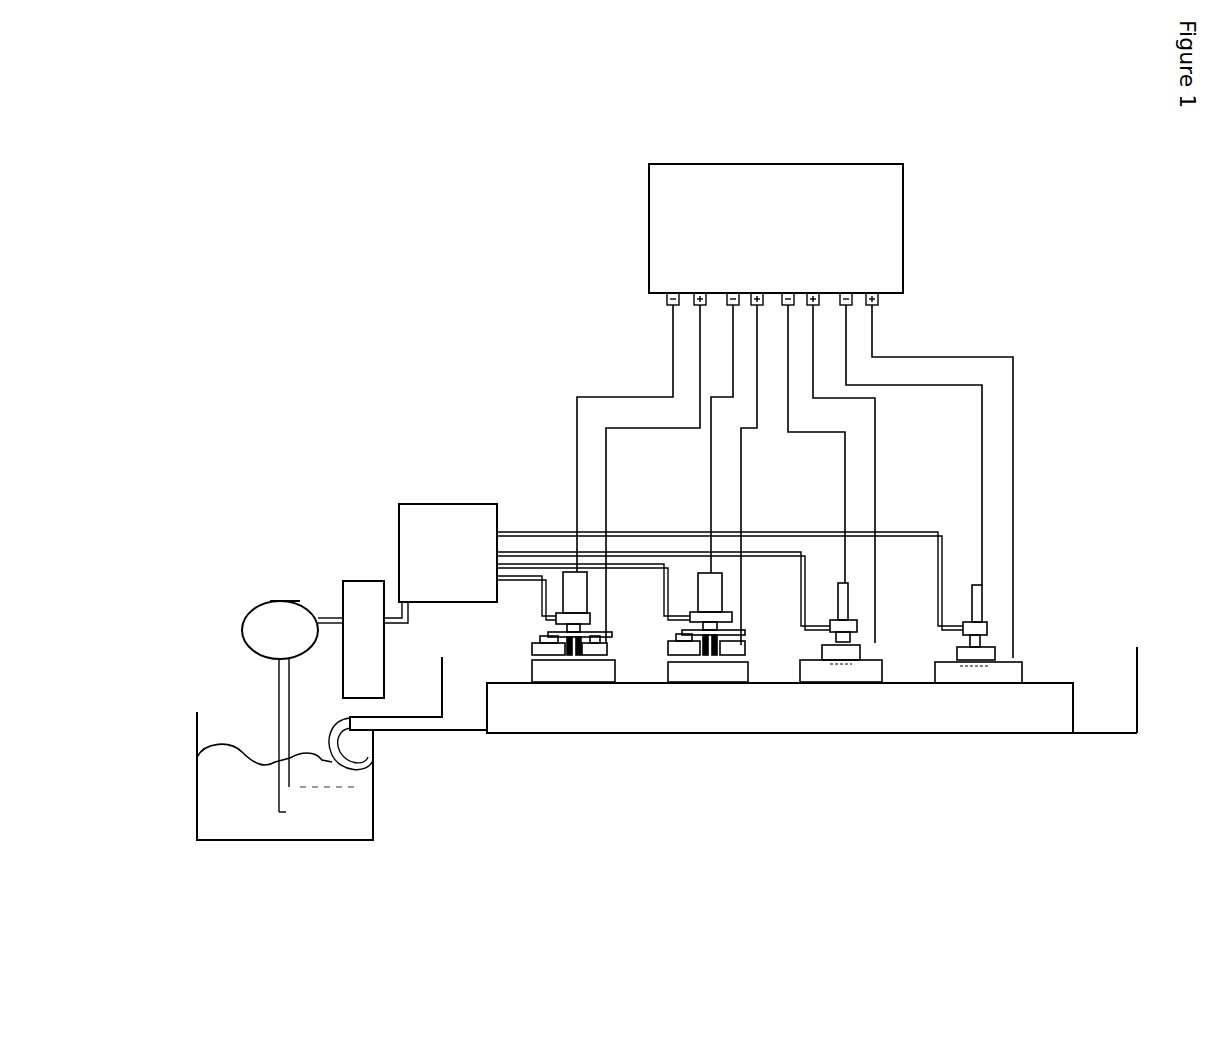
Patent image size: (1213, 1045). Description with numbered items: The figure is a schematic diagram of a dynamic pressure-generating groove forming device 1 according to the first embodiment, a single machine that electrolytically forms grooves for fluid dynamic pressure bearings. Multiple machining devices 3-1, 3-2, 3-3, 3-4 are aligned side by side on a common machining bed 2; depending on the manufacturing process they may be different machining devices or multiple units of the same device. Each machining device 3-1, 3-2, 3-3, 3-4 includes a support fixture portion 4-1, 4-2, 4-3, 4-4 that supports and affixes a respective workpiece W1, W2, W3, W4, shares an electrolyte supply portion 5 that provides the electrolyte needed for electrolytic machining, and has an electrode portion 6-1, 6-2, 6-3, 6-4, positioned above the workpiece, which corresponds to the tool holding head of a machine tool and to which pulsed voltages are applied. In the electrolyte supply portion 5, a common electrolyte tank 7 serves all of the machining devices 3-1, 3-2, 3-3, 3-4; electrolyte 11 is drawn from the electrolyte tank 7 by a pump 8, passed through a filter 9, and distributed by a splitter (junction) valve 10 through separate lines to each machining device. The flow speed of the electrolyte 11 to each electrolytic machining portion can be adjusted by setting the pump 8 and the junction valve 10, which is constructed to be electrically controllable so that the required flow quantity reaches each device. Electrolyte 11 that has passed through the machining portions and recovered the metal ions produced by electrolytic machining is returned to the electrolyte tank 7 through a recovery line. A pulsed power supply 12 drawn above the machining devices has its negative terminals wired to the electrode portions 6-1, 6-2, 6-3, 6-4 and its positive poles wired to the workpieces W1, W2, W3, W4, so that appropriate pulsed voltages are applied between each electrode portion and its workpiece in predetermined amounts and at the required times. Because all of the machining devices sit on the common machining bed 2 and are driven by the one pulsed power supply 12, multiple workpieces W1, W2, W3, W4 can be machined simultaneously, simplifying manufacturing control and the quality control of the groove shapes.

The dynamic pressure-generating groove forming device 1 is at (438, 291).
The machining bed 2 is at (1073, 700).
The machining device 3-1 is at (622, 528).
The machining device 3-2 is at (760, 528).
The machining device 3-3 is at (888, 528).
The machining device 3-4 is at (1036, 530).
The support fixture portion 4-1 is at (536, 655).
The support fixture portion 4-2 is at (676, 655).
The support fixture portion 4-3 is at (814, 655).
The support fixture portion 4-4 is at (950, 655).
The electrolyte supply portion 5 is at (318, 560).
The electrode portion 6-1 is at (592, 615).
The electrode portion 6-2 is at (730, 613).
The electrode portion 6-3 is at (858, 622).
The electrode portion 6-4 is at (988, 624).
The electrolyte tank 7 is at (374, 787).
The pump 8 is at (285, 601).
The filter 9 is at (366, 581).
The splitter (junction) valve 10 is at (460, 504).
The electrolyte 11 is at (252, 797).
The pulsed power supply 12 is at (904, 229).
The workpiece W1 is at (610, 635).
The workpiece W2 is at (742, 634).
The workpiece W3 is at (862, 645).
The workpiece W4 is at (996, 648).